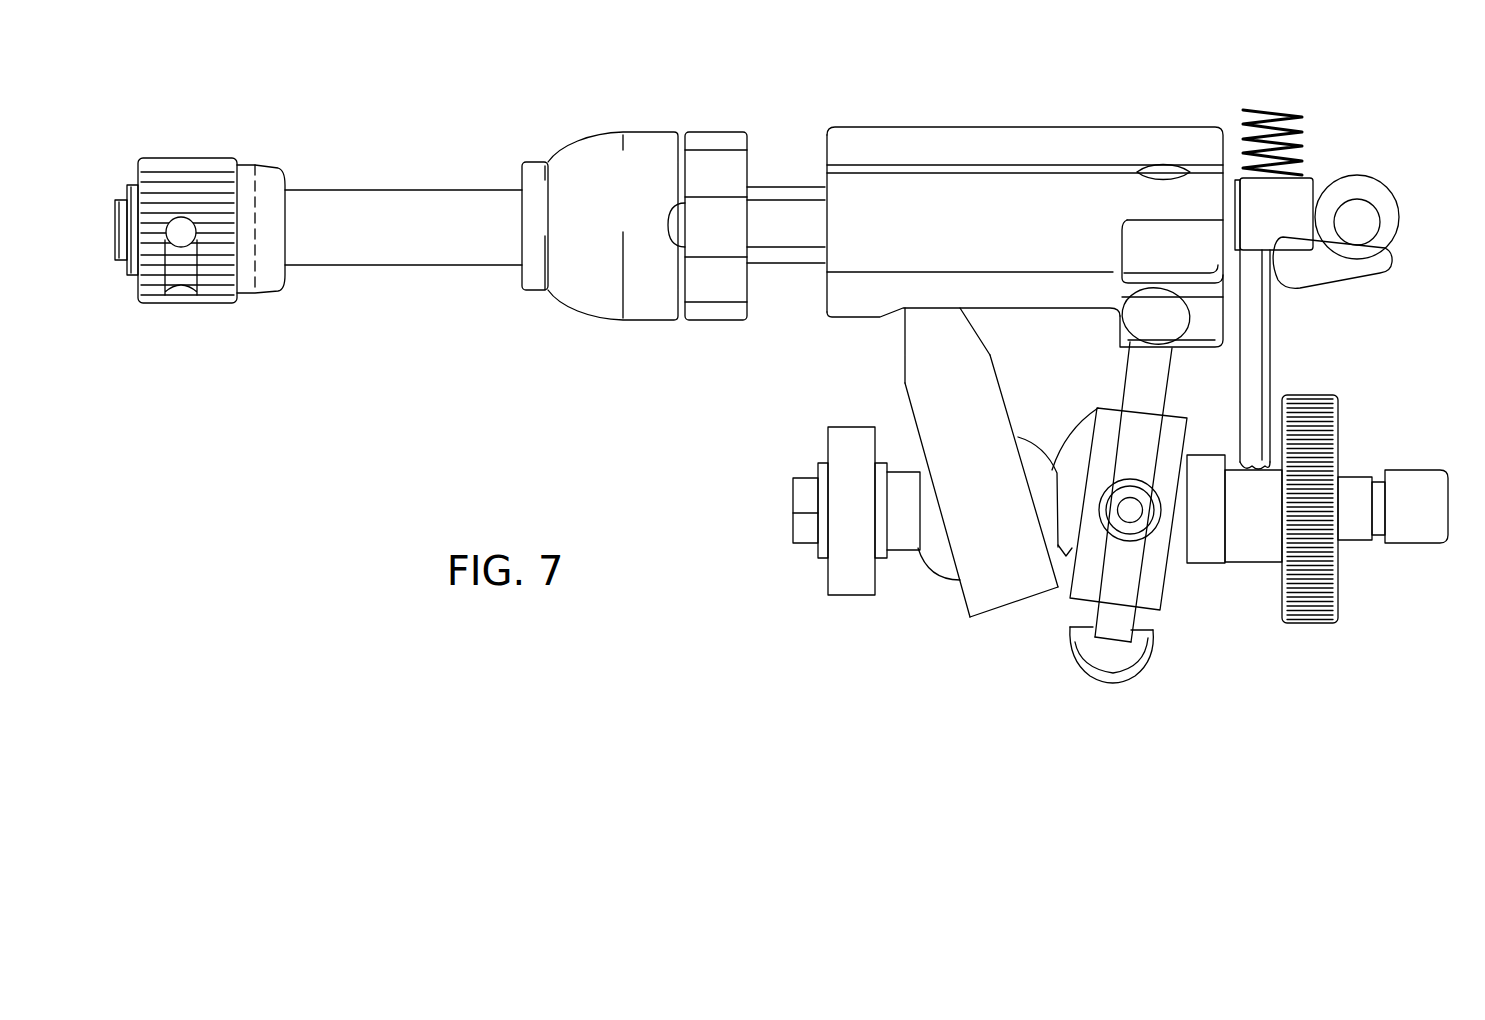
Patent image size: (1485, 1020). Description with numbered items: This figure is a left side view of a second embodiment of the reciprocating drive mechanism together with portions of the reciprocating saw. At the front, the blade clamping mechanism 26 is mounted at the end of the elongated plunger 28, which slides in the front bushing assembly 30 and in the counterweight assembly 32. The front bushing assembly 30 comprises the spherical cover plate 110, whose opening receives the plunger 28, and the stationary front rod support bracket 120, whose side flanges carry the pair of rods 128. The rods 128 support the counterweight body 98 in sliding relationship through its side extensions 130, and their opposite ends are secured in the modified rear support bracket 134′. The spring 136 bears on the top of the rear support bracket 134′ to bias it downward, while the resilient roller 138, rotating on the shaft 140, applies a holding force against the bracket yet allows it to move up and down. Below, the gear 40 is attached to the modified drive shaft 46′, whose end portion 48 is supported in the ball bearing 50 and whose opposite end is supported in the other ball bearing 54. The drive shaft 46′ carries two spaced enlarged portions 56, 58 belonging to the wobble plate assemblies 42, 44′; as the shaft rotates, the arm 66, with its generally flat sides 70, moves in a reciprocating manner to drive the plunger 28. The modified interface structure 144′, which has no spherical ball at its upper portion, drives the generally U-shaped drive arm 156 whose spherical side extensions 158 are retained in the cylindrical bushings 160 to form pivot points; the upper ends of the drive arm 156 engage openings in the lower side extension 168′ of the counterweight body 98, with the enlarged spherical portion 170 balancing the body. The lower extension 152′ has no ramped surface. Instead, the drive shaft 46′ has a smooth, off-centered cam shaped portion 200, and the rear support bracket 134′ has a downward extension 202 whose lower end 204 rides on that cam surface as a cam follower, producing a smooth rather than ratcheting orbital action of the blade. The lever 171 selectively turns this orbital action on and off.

The blade clamping mechanism 26 is at (179, 157).
The plunger 28 is at (388, 233).
The front bushing assembly 30 is at (634, 186).
The counterweight assembly 32 is at (1027, 212).
The gear 40 is at (1312, 603).
The wobble plate assembly 42 is at (1090, 571).
The wobble plate assembly 44′ is at (1181, 671).
The drive shaft 46′ is at (1203, 565).
The end portion 48 is at (1382, 537).
The ball bearing 50 is at (1422, 522).
The ball bearing 54 is at (845, 582).
The enlarged portion 56 is at (938, 557).
The enlarged portion 58 is at (1078, 450).
The arm 66 is at (961, 462).
The flat sides 70 is at (907, 402).
The counterweight body 98 is at (907, 148).
The spherical cover plate 110 is at (635, 167).
The front rod support bracket 120 is at (713, 168).
The rods 128 is at (785, 227).
The side extensions 130 is at (857, 250).
The rear support bracket 134′ is at (1288, 197).
The spring 136 is at (1285, 107).
The roller 138 is at (1377, 183).
The shaft 140 is at (1360, 223).
The interface structure 144′ is at (1072, 492).
The lower extension 152′ is at (1203, 318).
The drive arm 156 is at (1072, 637).
The spherical side extensions 158 is at (1130, 510).
The cylindrical bushings 160 is at (1105, 530).
The lower side extension 168′ is at (1153, 247).
The enlarged spherical portion 170 is at (1148, 317).
The lever 171 is at (1325, 267).
The cam shaped portion 200 is at (1255, 530).
The downward extension 202 is at (1316, 368).
The lower end 204 is at (1257, 485).